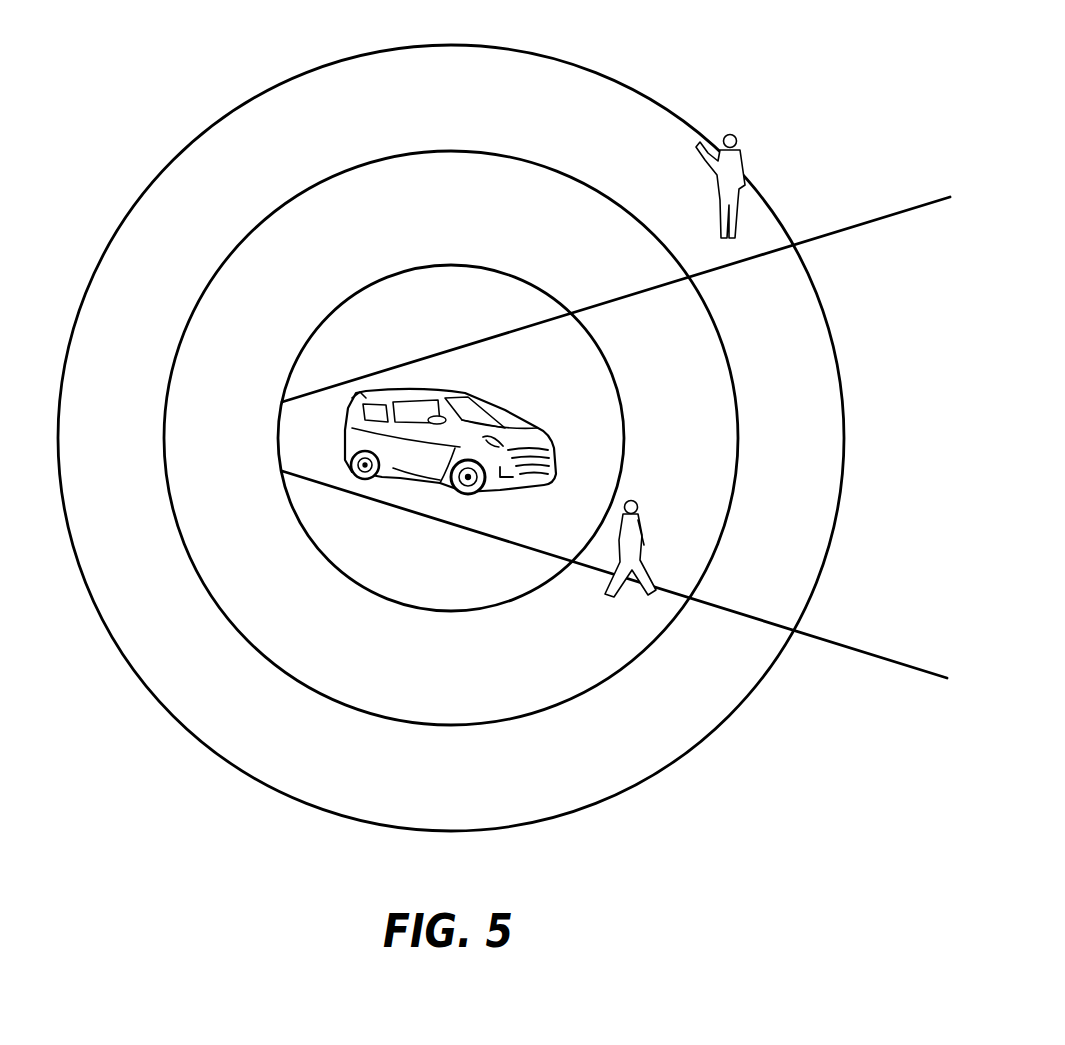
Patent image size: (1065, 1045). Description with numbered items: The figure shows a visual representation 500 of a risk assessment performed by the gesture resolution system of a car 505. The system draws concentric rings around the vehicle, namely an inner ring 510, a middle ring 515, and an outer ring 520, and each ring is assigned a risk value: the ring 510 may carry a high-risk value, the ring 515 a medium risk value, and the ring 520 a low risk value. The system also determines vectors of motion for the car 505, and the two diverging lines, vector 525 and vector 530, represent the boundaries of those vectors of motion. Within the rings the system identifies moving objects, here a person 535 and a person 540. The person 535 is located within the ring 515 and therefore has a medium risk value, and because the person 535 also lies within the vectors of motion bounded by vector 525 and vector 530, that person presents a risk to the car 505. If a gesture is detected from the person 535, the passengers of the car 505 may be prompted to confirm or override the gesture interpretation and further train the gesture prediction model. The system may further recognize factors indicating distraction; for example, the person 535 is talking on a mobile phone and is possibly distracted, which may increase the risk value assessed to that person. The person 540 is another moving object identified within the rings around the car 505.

The visual representation 500 is at (962, 64).
The car 505 is at (467, 393).
The ring 510 is at (431, 266).
The ring 515 is at (395, 156).
The ring 520 is at (323, 66).
The vector 525 is at (929, 203).
The vector 530 is at (898, 662).
The person 535 is at (638, 500).
The person 540 is at (742, 150).